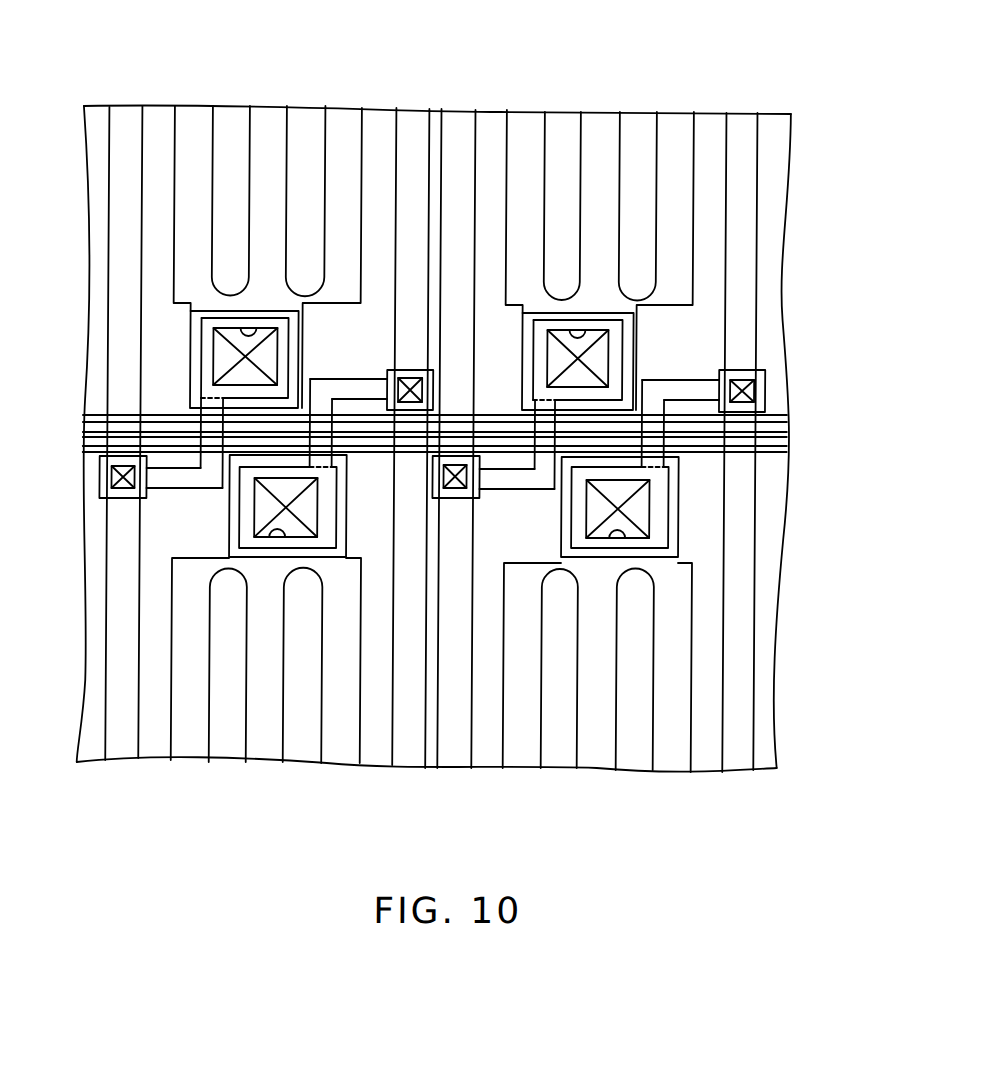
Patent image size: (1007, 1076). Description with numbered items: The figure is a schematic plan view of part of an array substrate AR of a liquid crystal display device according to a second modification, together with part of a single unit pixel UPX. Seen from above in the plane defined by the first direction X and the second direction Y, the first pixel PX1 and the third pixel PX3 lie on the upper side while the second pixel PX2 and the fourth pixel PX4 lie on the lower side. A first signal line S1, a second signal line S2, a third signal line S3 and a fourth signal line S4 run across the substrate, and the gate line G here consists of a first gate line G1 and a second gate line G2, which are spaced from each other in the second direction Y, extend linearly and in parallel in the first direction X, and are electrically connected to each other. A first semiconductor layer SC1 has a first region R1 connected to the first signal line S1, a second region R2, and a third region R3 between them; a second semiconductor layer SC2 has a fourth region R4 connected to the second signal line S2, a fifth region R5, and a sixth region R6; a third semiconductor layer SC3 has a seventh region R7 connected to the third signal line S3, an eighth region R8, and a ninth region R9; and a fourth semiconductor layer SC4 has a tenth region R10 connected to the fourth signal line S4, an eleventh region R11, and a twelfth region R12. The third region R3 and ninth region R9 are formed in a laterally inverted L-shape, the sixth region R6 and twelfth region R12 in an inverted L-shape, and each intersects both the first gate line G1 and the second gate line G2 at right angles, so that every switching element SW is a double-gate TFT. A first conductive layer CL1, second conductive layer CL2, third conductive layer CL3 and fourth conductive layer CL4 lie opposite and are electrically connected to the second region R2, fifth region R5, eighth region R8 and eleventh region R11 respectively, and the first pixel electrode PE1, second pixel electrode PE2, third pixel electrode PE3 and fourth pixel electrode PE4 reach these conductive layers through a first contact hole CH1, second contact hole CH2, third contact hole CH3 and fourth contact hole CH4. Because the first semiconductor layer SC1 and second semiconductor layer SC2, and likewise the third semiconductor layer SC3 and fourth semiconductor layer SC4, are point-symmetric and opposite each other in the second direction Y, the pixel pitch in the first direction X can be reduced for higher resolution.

The array substrate AR is at (806, 90).
The unit pixel UPX is at (808, 136).
The first pixel PX1 is at (314, 103).
The second pixel PX2 is at (345, 785).
The third pixel PX3 is at (546, 104).
The fourth pixel PX4 is at (527, 785).
The first signal line S1 is at (129, 121).
The second signal line S2 is at (411, 121).
The third signal line S3 is at (456, 123).
The fourth signal line S4 is at (744, 126).
The first pixel electrode PE1 is at (270, 118).
The second pixel electrode PE2 is at (274, 750).
The third pixel electrode PE3 is at (604, 121).
The fourth pixel electrode PE4 is at (607, 755).
The gate line G is at (843, 414).
The first gate line G1 is at (776, 423).
The second gate line G2 is at (776, 450).
The switching element SW is at (373, 370).
The first semiconductor layer SC1 is at (163, 501).
The second semiconductor layer SC2 is at (334, 375).
The third semiconductor layer SC3 is at (495, 501).
The fourth semiconductor layer SC4 is at (666, 376).
The first contact hole CH1 is at (257, 322).
The second contact hole CH2 is at (281, 546).
The third contact hole CH3 is at (590, 323).
The fourth contact hole CH4 is at (612, 546).
The first conductive layer CL1 is at (212, 308).
The second conductive layer CL2 is at (326, 560).
The third conductive layer CL3 is at (543, 310).
The fourth conductive layer CL4 is at (659, 560).
The first region R1 is at (129, 455).
The second region R2 is at (191, 322).
The third region R3 is at (174, 466).
The fourth region R4 is at (409, 412).
The fifth region R5 is at (339, 521).
The sixth region R6 is at (363, 400).
The seventh region R7 is at (461, 455).
The eighth region R8 is at (523, 325).
The ninth region R9 is at (506, 467).
The tenth region R10 is at (741, 414).
The eleventh region R11 is at (671, 522).
The twelfth region R12 is at (699, 402).
The first direction X is at (32, 20).
The second direction Y is at (32, 20).